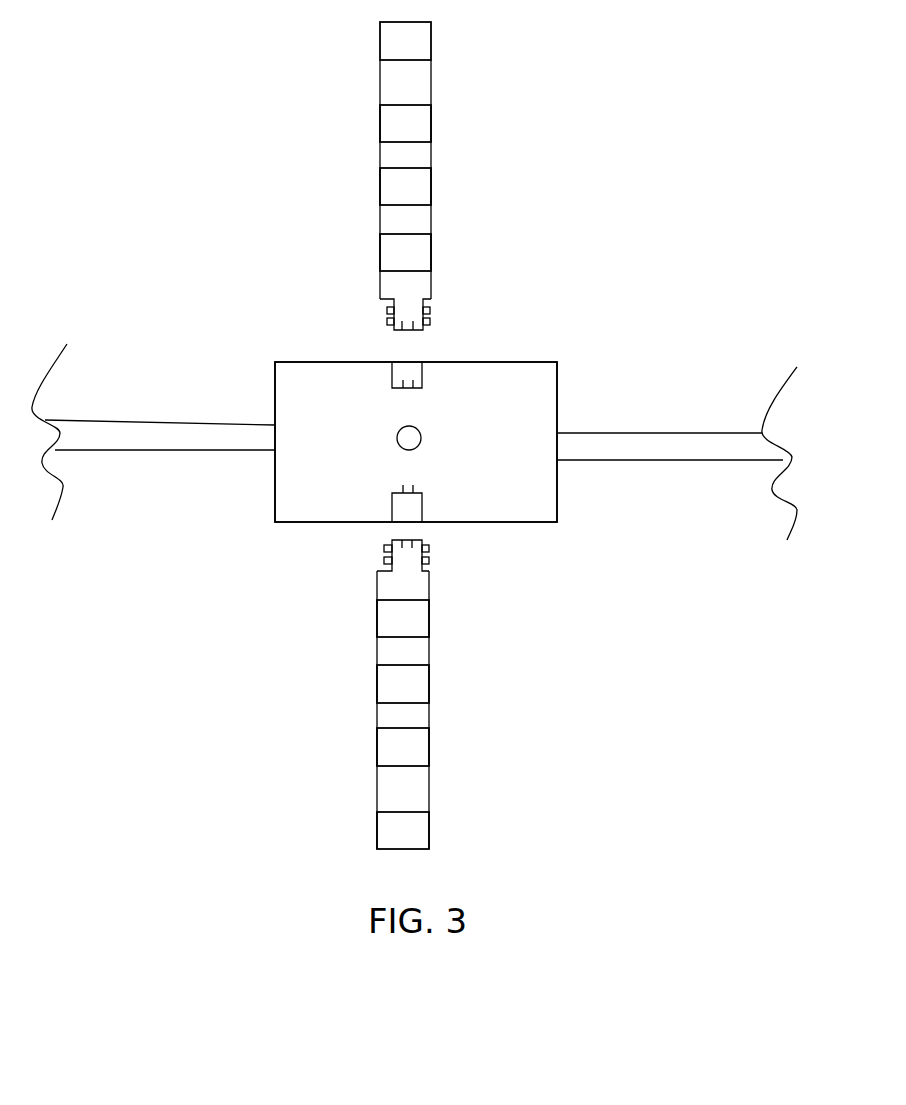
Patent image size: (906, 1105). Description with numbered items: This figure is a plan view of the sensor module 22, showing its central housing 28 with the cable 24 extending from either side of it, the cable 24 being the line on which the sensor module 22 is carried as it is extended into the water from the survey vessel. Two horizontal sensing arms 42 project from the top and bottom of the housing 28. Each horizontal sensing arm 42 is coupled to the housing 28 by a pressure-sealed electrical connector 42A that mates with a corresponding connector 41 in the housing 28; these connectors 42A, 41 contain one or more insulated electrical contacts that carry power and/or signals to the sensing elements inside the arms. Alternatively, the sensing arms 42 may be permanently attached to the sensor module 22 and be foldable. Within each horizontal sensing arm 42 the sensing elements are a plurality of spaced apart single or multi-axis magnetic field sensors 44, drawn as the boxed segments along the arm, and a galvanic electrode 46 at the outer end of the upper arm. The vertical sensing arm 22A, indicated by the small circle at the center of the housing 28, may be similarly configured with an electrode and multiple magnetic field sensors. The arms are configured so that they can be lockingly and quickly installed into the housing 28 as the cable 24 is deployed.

The sensor module 22 is at (597, 299).
The vertical sensing arm 22A is at (414, 436).
The cable 24 is at (193, 448).
The housing 28 is at (515, 372).
The connectors 41 is at (395, 382).
The horizontal sensing arms 42 is at (388, 283).
The pressure-sealed electrical connectors 42A is at (431, 320).
The magnetic field sensors 44 is at (422, 123).
The galvanic electrode 46 is at (420, 43).